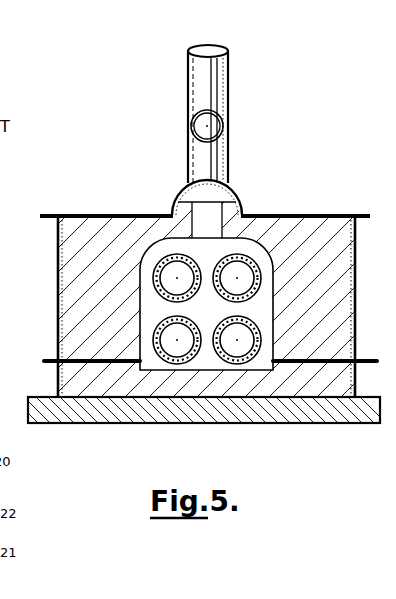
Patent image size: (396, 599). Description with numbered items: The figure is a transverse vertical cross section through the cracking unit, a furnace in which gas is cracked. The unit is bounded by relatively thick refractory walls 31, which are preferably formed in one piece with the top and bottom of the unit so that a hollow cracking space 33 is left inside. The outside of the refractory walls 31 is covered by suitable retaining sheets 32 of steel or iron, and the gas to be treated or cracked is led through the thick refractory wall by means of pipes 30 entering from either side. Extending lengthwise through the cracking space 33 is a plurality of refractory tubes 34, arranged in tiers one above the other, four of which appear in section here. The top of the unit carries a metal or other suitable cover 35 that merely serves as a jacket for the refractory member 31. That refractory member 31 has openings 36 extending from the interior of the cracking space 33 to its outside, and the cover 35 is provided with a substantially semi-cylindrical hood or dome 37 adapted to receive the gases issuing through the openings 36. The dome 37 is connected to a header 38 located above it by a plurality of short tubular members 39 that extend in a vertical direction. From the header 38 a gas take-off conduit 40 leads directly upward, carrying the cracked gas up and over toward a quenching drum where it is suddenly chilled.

The pipes 30 is at (78, 352).
The refractory walls 31 is at (318, 287).
The retaining sheets 32 is at (356, 243).
The cracking space 33 is at (263, 277).
The refractory tubes 34 is at (240, 254).
The cover 35 is at (127, 192).
The openings 36 is at (213, 210).
The hood or dome 37 is at (228, 195).
The header 38 is at (193, 113).
The short tubular members 39 is at (197, 157).
The gas take-off conduit 40 is at (217, 65).